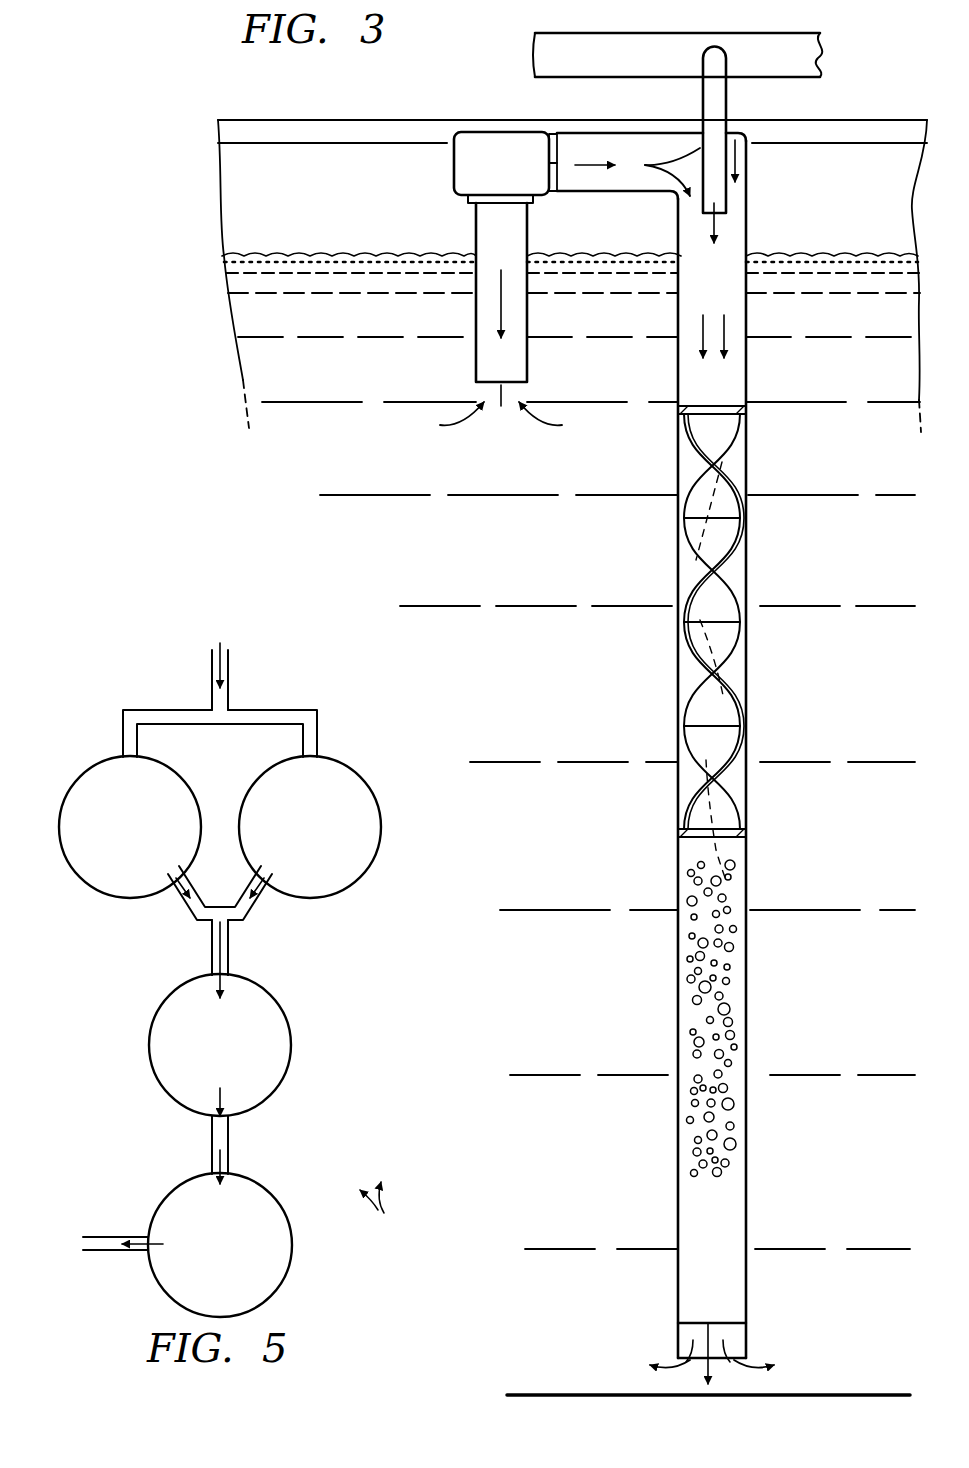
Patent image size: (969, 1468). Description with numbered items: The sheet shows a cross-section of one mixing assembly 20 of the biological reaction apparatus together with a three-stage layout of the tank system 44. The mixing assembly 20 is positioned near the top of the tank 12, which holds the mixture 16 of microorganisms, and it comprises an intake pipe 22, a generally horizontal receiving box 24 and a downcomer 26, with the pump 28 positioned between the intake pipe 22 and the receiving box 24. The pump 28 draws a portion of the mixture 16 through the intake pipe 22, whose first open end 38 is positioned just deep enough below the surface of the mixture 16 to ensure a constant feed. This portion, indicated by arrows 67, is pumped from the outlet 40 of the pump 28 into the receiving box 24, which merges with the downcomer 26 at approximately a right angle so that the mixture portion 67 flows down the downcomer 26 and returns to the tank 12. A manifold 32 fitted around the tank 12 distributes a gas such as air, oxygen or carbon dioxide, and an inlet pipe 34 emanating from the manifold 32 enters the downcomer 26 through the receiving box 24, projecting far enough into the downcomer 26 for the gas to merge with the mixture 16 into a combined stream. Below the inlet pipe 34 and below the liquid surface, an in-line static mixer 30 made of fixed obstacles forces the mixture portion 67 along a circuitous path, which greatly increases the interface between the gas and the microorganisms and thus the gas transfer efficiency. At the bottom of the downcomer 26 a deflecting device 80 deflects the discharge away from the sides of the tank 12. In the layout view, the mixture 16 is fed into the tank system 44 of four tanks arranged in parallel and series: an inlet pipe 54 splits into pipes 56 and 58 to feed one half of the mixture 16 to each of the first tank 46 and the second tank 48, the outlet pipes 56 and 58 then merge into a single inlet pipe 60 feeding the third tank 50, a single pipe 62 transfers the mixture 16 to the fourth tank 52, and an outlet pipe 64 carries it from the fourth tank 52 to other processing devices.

In FIG. 3, the tank 12 is at (278, 126).
In FIG. 3, the mixture 16 is at (282, 253).
In FIG. 5, the mixture 16 is at (223, 645).
In FIG. 3, the mixing assembly 20 is at (474, 90).
In FIG. 3, the intake pipe 22 is at (530, 350).
In FIG. 3, the receiving box 24 is at (648, 134).
In FIG. 3, the downcomer 26 is at (750, 222).
In FIG. 3, the pump 28 is at (513, 181).
In FIG. 3, the in-line static mixer 30 is at (748, 440).
In FIG. 3, the manifold 32 is at (832, 60).
In FIG. 3, the inlet pipe 34 is at (721, 92).
In FIG. 3, the first open end 38 is at (488, 379).
In FIG. 3, the outlet 40 is at (554, 158).
In FIG. 5, the tank system 44 is at (385, 1214).
In FIG. 5, the first tank 46 is at (143, 841).
In FIG. 5, the second tank 48 is at (323, 841).
In FIG. 5, the third tank 50 is at (233, 1059).
In FIG. 5, the fourth tank 52 is at (233, 1259).
In FIG. 5, the inlet pipe 54 is at (232, 678).
In FIG. 5, the pipe 56 is at (147, 710).
In FIG. 5, the pipe 58 is at (293, 710).
In FIG. 5, the single inlet pipe 60 is at (212, 957).
In FIG. 5, the single pipe 62 is at (230, 1143).
In FIG. 5, the outlet pipe 64 is at (108, 1237).
In FIG. 3, the mixture portion 67 is at (488, 252).
In FIG. 3, the deflecting device 80 is at (754, 1336).